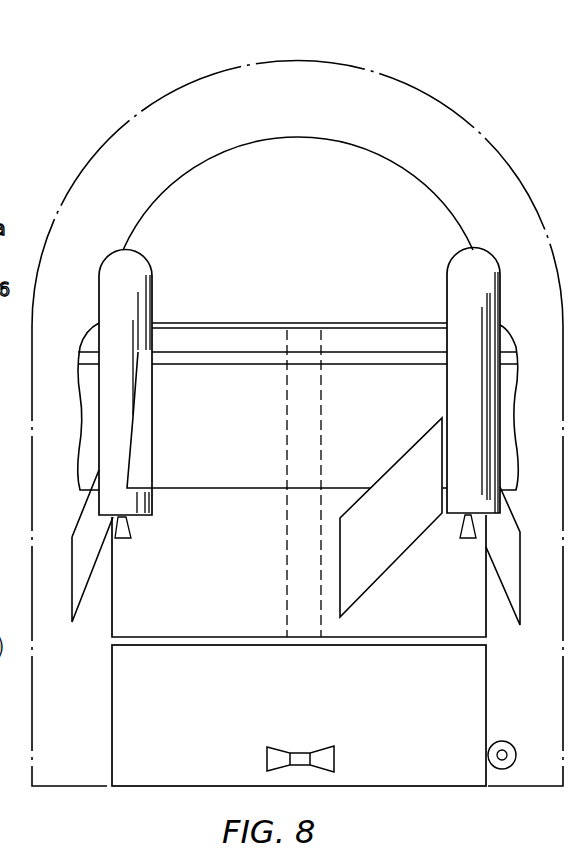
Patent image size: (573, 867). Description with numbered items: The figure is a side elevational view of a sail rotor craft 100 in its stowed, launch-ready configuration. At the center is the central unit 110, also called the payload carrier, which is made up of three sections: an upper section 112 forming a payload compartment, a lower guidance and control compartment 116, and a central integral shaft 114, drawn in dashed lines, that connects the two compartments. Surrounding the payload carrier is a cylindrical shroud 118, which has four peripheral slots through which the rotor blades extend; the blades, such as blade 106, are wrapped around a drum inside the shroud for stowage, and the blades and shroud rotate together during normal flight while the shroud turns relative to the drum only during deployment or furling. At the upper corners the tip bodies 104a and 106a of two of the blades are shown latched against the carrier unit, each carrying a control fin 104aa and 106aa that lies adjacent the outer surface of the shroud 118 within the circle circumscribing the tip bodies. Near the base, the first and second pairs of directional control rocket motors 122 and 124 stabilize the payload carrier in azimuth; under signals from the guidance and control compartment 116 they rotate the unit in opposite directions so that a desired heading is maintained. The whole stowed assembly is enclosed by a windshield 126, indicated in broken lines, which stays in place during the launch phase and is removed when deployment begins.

The sail rotor craft 100 is at (408, 70).
The windshield 126 is at (124, 128).
The upper section 112 is at (396, 178).
The central unit 110 is at (430, 238).
The tip body 106a is at (130, 289).
The tip body 104a is at (481, 284).
The blade 106 is at (192, 468).
The central integral shaft 114 is at (306, 412).
The control fin 104aa is at (365, 573).
The control fin 106aa is at (83, 568).
The shroud 118 is at (130, 615).
The guidance and control compartment 116 is at (411, 765).
The directional control rocket motors 122 is at (290, 754).
The directional control rocket motors 124 is at (502, 752).